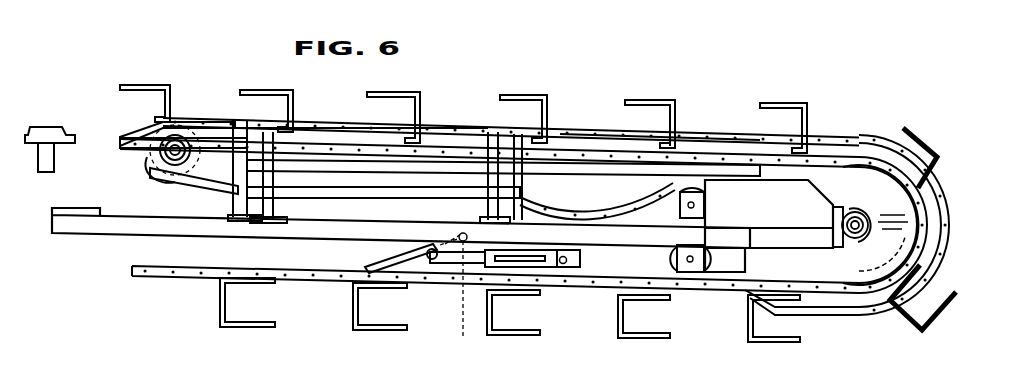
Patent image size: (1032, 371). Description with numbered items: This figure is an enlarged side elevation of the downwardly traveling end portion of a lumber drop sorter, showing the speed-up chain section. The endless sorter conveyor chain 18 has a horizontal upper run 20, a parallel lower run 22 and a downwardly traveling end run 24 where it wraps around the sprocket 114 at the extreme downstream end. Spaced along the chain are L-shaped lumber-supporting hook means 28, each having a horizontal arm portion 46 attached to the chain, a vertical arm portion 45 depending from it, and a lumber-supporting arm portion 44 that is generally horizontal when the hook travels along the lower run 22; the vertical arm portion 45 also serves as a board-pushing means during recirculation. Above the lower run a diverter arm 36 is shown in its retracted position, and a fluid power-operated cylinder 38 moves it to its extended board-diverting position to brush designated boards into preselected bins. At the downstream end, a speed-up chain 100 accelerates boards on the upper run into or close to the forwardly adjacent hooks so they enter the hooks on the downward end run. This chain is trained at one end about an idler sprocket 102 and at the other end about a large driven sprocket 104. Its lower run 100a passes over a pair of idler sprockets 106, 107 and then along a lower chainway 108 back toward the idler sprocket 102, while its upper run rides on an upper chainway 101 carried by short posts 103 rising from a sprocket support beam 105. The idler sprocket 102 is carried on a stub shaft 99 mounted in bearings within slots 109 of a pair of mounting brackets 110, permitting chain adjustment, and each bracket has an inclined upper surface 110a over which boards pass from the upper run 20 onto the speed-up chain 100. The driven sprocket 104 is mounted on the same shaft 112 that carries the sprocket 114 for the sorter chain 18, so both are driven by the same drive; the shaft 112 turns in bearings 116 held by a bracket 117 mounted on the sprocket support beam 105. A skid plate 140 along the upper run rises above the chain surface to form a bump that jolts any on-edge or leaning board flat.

The sorter conveyor chain 18 is at (923, 252).
The upper run 20 is at (480, 140).
The lower run 22 is at (340, 284).
The downwardly traveling end run 24 is at (923, 124).
The lumber-supporting hook means 28 is at (410, 108).
The diverter arm 36 is at (389, 255).
The fluid power-operated cylinder 38 is at (535, 253).
The lumber-supporting arm portion 44 is at (640, 104).
The vertical arm portion 45 is at (677, 119).
The horizontal arm portion 46 is at (643, 128).
The stub shaft 99 is at (143, 152).
The speed-up chain 100 is at (835, 130).
The lower run of speed-up chain 100a is at (585, 208).
The upper chainway 101 is at (325, 128).
The idler sprocket 102 is at (167, 181).
The short posts 103 is at (273, 173).
The driven sprocket 104 is at (940, 168).
The sprocket support beam 105 is at (213, 223).
The idler sprocket 106 is at (735, 265).
The idler sprocket 107 is at (717, 197).
The lower chainway 108 is at (430, 191).
The slots 109 is at (146, 156).
The mounting brackets 110 is at (208, 130).
The inclined upper surface 110a is at (150, 123).
The shaft 112 is at (855, 244).
The sprocket 114 is at (855, 275).
The bearings 116 is at (869, 212).
The bracket 117 is at (822, 189).
The skid plate 140 is at (47, 126).